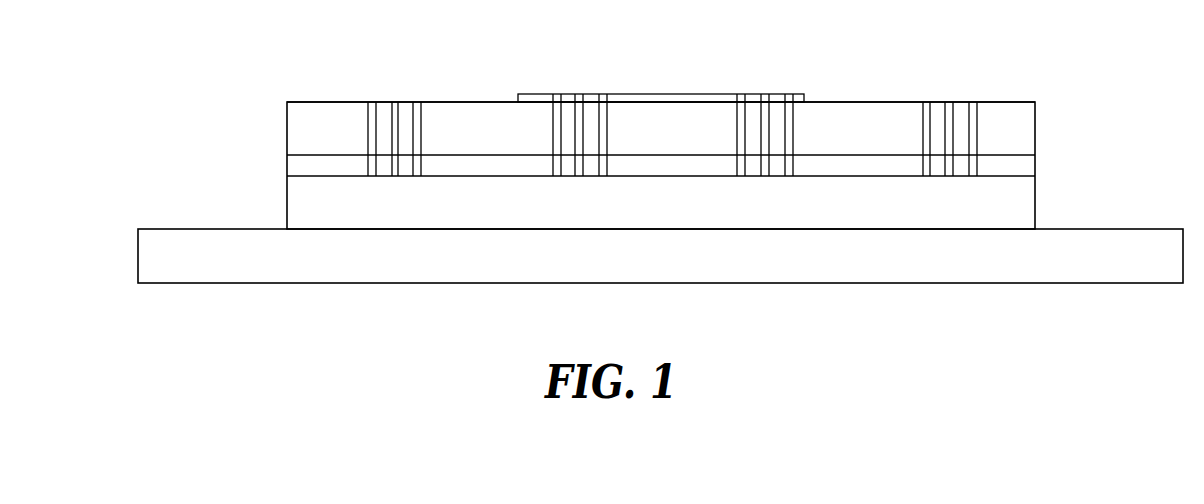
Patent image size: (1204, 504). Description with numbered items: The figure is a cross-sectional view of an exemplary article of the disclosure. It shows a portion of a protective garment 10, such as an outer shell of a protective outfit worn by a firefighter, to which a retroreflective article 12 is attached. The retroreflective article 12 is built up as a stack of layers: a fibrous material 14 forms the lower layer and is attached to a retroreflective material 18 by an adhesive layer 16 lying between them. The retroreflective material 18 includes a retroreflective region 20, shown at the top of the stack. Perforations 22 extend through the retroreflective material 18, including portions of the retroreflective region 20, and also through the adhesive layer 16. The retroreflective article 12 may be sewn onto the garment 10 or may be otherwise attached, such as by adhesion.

The protective garment 10 is at (138, 262).
The retroreflective article 12 is at (1052, 99).
The fibrous material 14 is at (287, 208).
The adhesive layer 16 is at (287, 166).
The retroreflective material 18 is at (287, 123).
The retroreflective region 20 is at (535, 94).
The perforations 22 is at (417, 102).